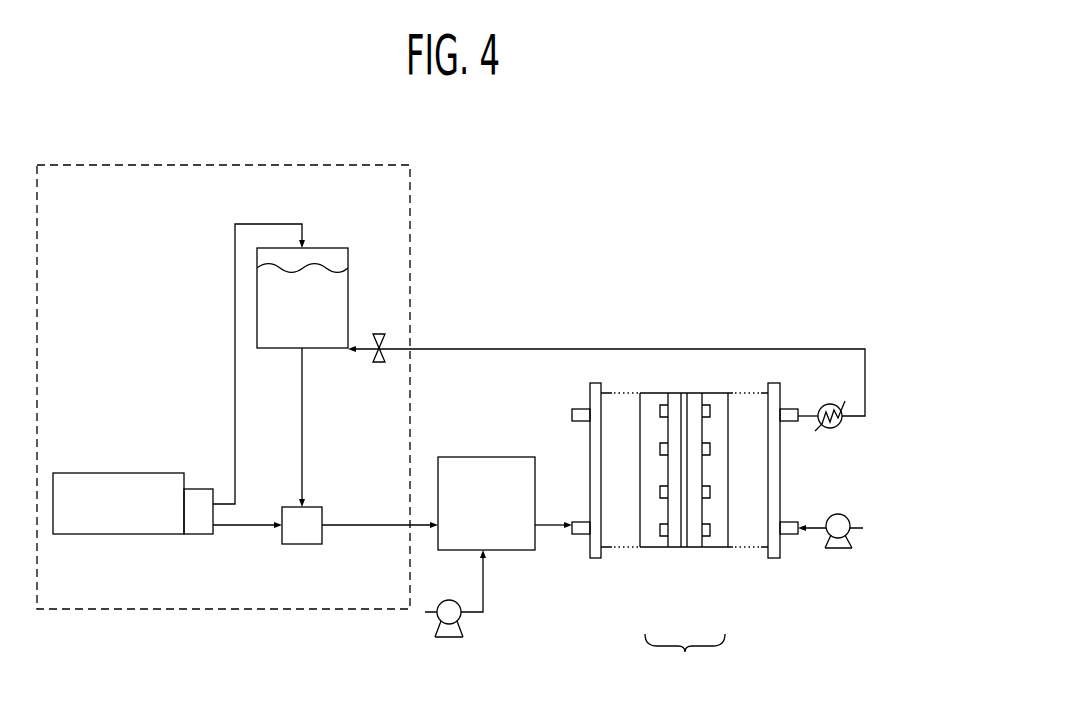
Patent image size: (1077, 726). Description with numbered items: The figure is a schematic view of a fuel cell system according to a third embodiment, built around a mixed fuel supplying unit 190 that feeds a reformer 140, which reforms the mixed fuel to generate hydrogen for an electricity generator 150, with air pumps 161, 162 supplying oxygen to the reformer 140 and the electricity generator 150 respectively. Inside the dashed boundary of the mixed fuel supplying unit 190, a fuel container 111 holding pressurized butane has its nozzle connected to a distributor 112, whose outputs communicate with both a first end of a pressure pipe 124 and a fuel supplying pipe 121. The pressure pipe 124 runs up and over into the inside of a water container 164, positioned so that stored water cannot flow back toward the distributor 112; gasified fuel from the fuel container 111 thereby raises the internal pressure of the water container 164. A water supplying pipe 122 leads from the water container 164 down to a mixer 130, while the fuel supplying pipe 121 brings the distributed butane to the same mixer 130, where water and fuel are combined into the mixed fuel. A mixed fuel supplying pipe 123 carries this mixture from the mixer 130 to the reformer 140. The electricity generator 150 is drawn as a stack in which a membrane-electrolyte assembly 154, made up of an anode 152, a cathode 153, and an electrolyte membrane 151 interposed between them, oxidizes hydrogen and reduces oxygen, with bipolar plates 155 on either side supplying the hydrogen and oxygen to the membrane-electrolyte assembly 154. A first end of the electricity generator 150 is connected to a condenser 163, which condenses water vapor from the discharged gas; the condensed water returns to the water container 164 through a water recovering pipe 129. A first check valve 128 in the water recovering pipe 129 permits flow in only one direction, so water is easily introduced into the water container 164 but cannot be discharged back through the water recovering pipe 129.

The fuel container 111 is at (113, 472).
The distributor 112 is at (197, 488).
The fuel supplying pipe 121 is at (256, 528).
The water supplying pipe 122 is at (303, 400).
The mixed fuel supplying pipe 123 is at (368, 528).
The pressure pipe 124 is at (263, 223).
The first check valve 128 is at (379, 333).
The water recovering pipe 129 is at (545, 347).
The mixer 130 is at (300, 545).
The reformer 140 is at (488, 457).
The electricity generator 150 is at (685, 488).
The electrolyte membrane 151 is at (685, 548).
The anode 152 is at (669, 548).
The cathode 153 is at (697, 548).
The membrane-electrolyte assembly 154 is at (685, 658).
The bipolar plate 155 is at (640, 548).
The air pump 161 is at (448, 640).
The air pump 162 is at (833, 551).
The condenser 163 is at (836, 429).
The water container 164 is at (333, 247).
The mixed fuel supplying unit 190 is at (326, 161).